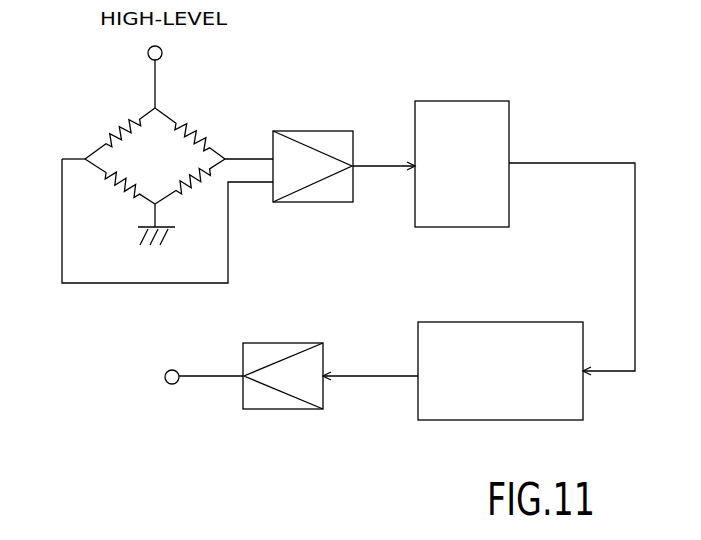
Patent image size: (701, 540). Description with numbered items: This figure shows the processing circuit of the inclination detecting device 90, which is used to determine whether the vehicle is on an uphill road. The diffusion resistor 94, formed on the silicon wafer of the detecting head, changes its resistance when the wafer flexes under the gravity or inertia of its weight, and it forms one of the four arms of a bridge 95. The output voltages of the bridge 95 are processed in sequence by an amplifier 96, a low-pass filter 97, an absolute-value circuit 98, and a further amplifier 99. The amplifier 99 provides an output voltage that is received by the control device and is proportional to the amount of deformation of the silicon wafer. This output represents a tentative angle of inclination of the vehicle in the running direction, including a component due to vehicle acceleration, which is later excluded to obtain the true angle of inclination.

The inclination detecting device 90 is at (268, 82).
The diffusion resistor 94 is at (183, 125).
The bridge 95 is at (135, 145).
The amplifier 96 is at (330, 140).
The low-pass filter 97 is at (467, 108).
The absolute-value circuit 98 is at (525, 332).
The amplifier 99 is at (288, 347).